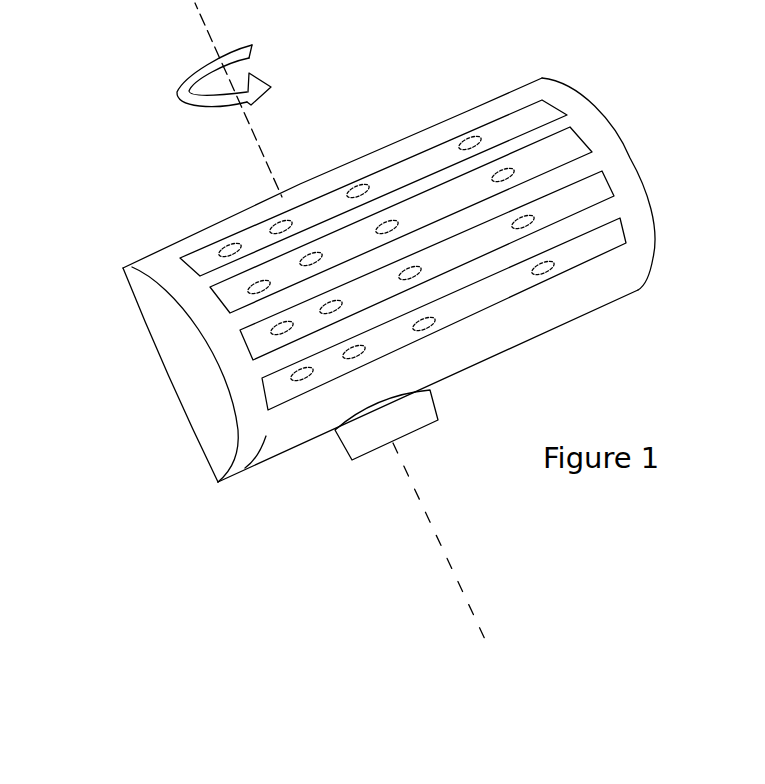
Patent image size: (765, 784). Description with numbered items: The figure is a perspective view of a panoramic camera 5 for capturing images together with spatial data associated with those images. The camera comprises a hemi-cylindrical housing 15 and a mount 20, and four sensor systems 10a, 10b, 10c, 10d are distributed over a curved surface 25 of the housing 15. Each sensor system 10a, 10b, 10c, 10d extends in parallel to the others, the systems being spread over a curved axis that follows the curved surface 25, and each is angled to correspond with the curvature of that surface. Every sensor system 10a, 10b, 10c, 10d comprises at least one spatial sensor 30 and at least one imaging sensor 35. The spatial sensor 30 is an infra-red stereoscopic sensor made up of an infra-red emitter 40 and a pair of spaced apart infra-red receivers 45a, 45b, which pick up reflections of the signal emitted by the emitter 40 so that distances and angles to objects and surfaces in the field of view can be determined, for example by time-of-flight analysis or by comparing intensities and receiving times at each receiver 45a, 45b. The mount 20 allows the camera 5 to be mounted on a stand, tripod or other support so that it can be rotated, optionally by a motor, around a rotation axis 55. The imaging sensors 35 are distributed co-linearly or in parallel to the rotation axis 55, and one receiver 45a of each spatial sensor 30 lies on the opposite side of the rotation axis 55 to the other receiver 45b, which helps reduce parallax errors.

The panoramic camera 5 is at (76, 158).
The sensor system 10a is at (612, 243).
The sensor system 10b is at (610, 185).
The sensor system 10c is at (578, 138).
The sensor system 10d is at (548, 100).
The housing 15 is at (638, 291).
The mount 20 is at (430, 413).
The curved surface 25 is at (218, 482).
The spatial sensor 30 is at (405, 270).
The imaging sensor 35 is at (332, 307).
The infra-red emitter 40 is at (357, 318).
The infra-red receiver 45a is at (290, 379).
The infra-red receiver 45b is at (518, 216).
The rotation axis 55 is at (211, 36).